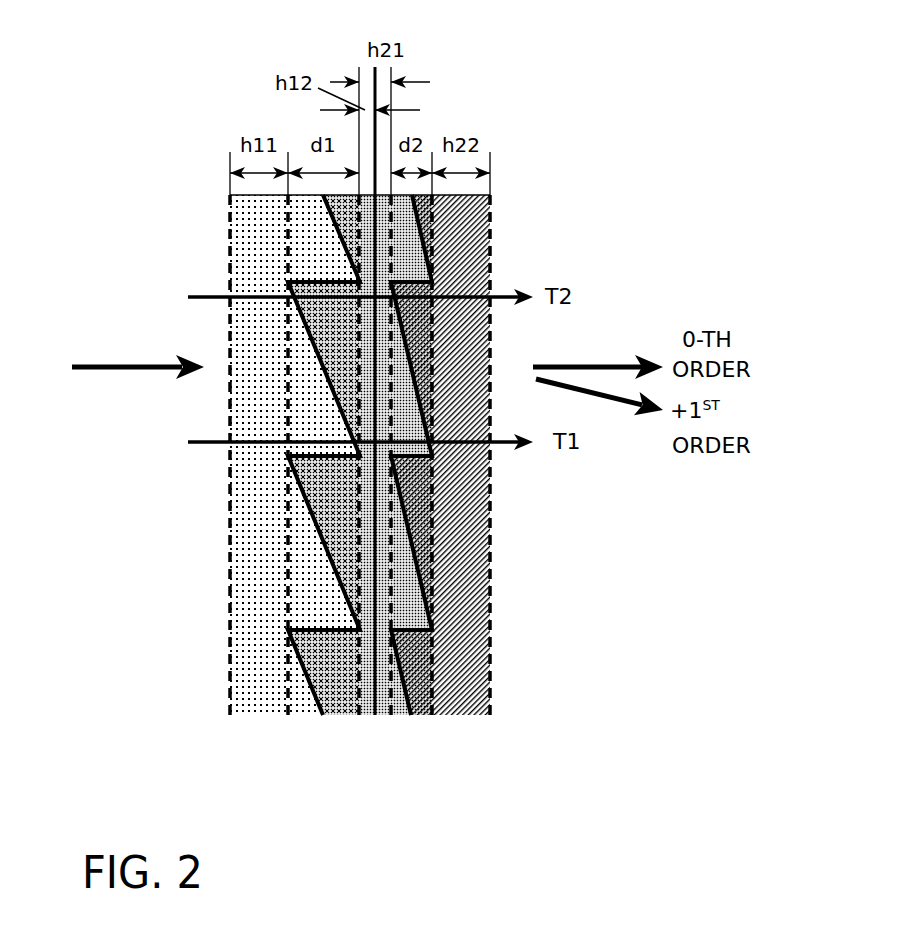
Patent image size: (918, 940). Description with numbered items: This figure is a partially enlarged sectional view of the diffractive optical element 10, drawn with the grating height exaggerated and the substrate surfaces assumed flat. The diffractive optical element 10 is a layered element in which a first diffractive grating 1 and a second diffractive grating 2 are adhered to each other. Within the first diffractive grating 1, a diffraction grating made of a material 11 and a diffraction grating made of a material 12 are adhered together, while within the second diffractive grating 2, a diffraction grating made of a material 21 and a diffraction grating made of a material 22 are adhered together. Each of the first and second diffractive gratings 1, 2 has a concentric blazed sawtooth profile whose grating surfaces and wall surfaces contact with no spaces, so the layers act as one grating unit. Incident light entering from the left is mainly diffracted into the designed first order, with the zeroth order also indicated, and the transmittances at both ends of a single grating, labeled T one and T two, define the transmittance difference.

The diffractive optical element 10 is at (372, 474).
The first diffractive grating 1 is at (266, 496).
The second diffractive grating 2 is at (481, 496).
The material 11 is at (318, 585).
The material 12 is at (330, 497).
The material 21 is at (403, 600).
The material 22 is at (417, 502).